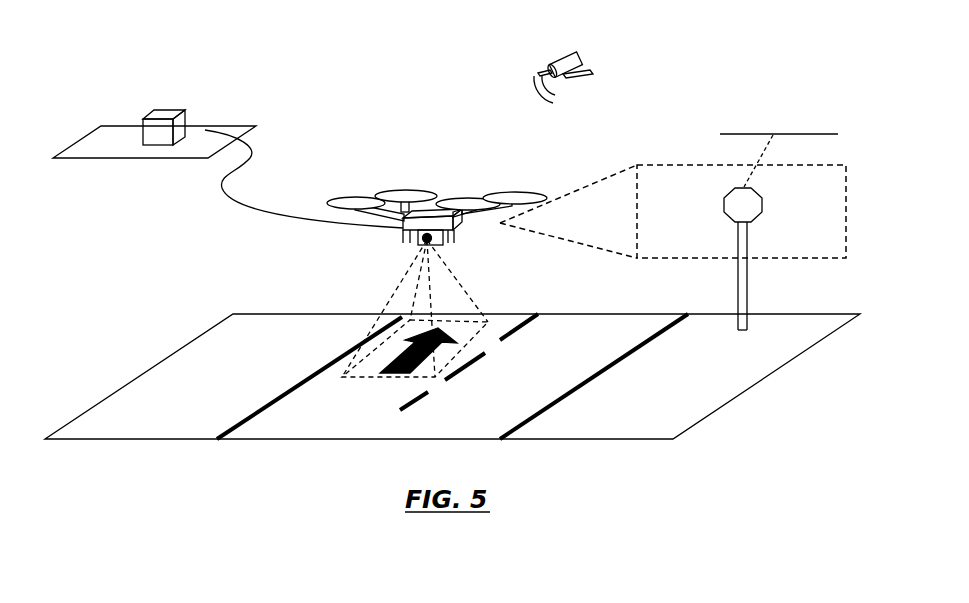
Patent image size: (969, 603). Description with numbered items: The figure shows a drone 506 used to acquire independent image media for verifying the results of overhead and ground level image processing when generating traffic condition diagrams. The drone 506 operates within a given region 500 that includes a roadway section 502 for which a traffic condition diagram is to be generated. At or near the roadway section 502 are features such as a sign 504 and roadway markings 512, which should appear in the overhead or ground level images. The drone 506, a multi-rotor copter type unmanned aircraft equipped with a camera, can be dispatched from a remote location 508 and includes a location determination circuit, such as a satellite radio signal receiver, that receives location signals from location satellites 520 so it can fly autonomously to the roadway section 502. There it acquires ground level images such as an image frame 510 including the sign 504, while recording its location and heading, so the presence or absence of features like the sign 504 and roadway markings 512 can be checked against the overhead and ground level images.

The region 500 is at (190, 55).
The roadway section 502 is at (298, 440).
The sign 504 is at (764, 205).
The drone 506 is at (403, 231).
The remote location 508 is at (181, 112).
The image frame 510 is at (847, 212).
The roadway markings 512 is at (404, 373).
The location satellites 520 is at (586, 65).